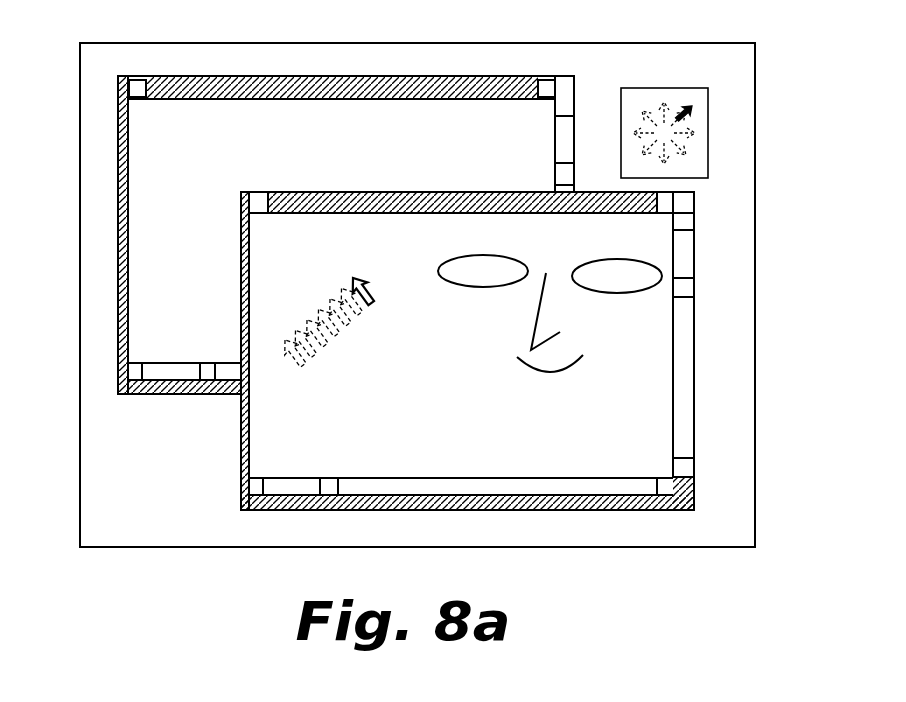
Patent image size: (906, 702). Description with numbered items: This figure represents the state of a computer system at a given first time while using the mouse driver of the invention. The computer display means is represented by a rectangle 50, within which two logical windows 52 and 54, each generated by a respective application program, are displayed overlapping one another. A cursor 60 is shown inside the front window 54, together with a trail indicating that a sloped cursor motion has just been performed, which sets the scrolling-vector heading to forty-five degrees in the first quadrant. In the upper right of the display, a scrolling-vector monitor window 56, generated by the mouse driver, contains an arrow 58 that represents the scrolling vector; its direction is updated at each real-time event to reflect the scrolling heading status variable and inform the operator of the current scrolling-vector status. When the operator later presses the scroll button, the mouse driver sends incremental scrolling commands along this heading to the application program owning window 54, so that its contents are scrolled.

The rectangle 50 is at (80, 424).
The logical window 52 is at (143, 330).
The logical window 54 is at (653, 424).
The scrolling-vector monitor window 56 is at (665, 88).
The arrow 58 is at (694, 107).
The cursor 60 is at (352, 276).